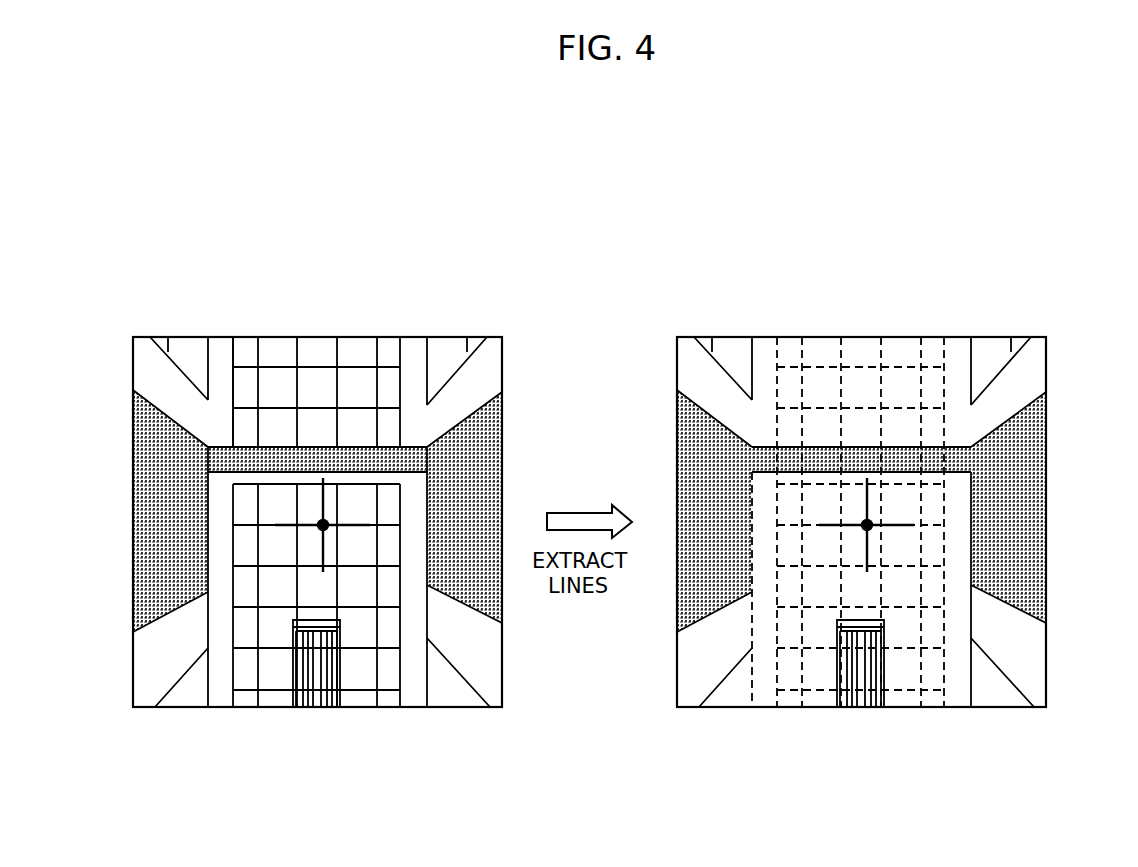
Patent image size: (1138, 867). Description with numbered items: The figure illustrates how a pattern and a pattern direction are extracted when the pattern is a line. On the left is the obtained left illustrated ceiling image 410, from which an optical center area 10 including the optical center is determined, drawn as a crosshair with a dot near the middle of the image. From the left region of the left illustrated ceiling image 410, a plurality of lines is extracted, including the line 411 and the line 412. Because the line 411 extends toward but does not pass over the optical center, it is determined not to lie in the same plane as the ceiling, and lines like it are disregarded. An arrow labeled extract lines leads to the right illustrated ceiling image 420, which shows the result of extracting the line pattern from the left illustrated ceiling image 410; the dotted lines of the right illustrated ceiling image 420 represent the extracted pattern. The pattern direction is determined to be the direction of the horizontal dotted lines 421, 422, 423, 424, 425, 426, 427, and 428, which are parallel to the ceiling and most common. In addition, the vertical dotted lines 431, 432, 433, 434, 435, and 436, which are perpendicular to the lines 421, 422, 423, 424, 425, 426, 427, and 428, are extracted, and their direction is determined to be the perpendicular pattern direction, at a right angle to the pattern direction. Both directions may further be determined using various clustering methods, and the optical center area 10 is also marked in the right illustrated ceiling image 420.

The optical center area 10 is at (323, 520).
The left illustrated ceiling image 410 is at (400, 337).
The line 411 is at (183, 432).
The line 412 is at (232, 345).
The right illustrated ceiling image 420 is at (683, 337).
The line 421 is at (940, 371).
The line 422 is at (940, 410).
The line 423 is at (940, 488).
The line 424 is at (940, 522).
The line 425 is at (940, 567).
The line 426 is at (945, 609).
The line 427 is at (945, 649).
The line 428 is at (945, 690).
The line 431 is at (777, 345).
The line 432 is at (802, 345).
The line 433 is at (842, 345).
The line 434 is at (881, 345).
The line 435 is at (922, 345).
The line 436 is at (945, 345).